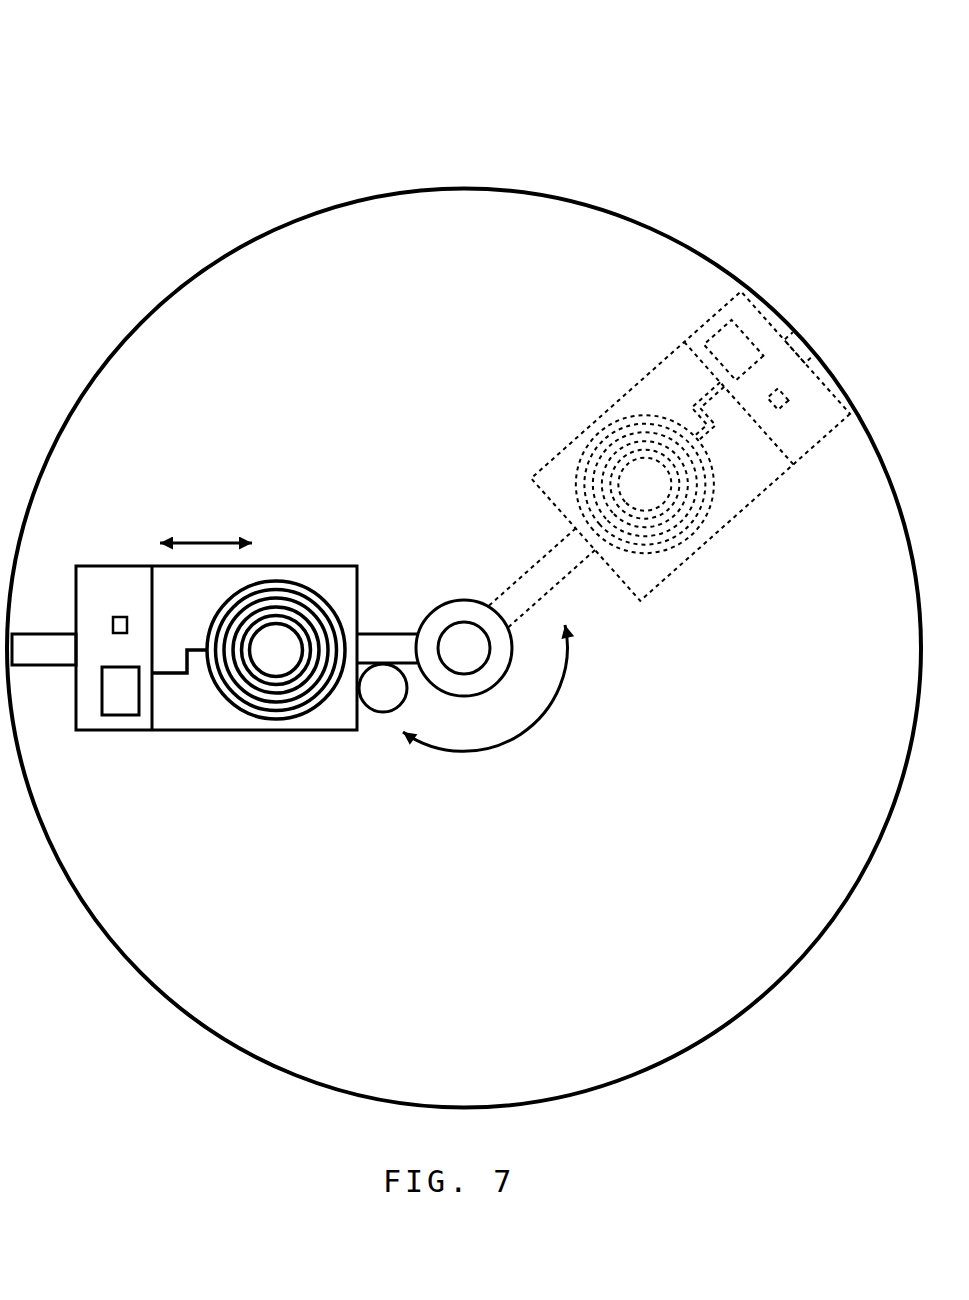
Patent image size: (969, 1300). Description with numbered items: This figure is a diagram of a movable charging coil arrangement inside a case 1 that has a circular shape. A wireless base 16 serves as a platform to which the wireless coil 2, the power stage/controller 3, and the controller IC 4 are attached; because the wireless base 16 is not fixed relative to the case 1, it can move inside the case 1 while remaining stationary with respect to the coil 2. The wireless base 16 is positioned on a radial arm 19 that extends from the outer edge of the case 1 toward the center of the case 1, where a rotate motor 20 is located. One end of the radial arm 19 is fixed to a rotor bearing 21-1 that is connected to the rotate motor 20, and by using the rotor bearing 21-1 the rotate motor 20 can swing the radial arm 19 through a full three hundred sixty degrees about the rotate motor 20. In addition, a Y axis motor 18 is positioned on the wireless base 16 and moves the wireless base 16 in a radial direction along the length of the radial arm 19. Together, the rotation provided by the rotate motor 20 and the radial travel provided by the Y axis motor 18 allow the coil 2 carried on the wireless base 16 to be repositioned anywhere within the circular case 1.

The case 1 is at (712, 257).
The wireless coil 2 is at (228, 708).
The power stage/controller 3 is at (117, 617).
The controller IC 4 is at (126, 715).
The wireless base 16 is at (313, 563).
The Y axis motor 18 is at (389, 662).
The radial arm 19 is at (365, 628).
The rotate motor 20 is at (473, 622).
The rotor bearing 21-1 is at (452, 612).